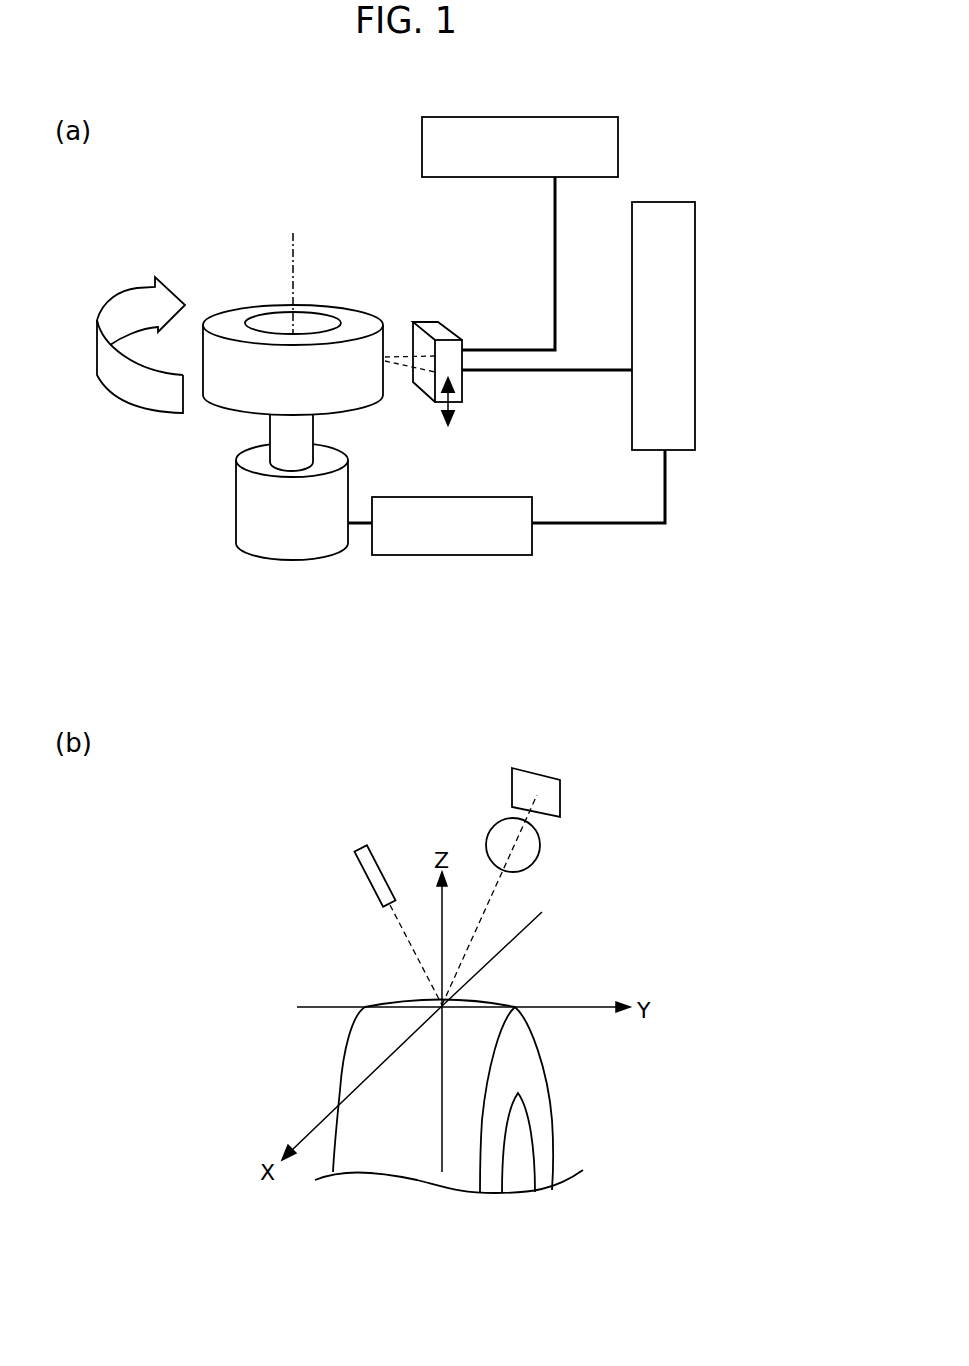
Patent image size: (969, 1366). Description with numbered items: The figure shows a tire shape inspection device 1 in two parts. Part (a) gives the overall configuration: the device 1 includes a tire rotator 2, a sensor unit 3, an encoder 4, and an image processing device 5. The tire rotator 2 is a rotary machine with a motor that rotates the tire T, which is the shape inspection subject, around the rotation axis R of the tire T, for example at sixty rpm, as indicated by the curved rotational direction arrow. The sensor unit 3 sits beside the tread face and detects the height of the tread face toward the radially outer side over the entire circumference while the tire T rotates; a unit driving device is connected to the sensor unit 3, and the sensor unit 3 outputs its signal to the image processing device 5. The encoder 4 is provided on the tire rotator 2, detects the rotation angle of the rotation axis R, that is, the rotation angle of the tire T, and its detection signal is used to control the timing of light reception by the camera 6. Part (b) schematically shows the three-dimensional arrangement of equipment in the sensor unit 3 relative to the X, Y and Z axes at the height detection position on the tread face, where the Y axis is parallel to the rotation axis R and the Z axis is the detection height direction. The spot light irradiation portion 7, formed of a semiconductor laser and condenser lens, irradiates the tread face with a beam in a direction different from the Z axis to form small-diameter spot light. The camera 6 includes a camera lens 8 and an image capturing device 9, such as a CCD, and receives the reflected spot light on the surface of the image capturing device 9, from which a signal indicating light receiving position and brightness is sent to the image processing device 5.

The tire shape inspection device 1 is at (657, 158).
The tire rotator 2 is at (251, 508).
The sensor unit 3 is at (430, 322).
The encoder 4 is at (535, 545).
The image processing device 5 is at (682, 203).
The camera 6 is at (493, 808).
The spot light irradiation portion 7 is at (360, 847).
The camera lens 8 is at (533, 843).
The image capturing device 9 is at (560, 782).
The tire T is at (350, 308).
The rotation axis R is at (292, 271).